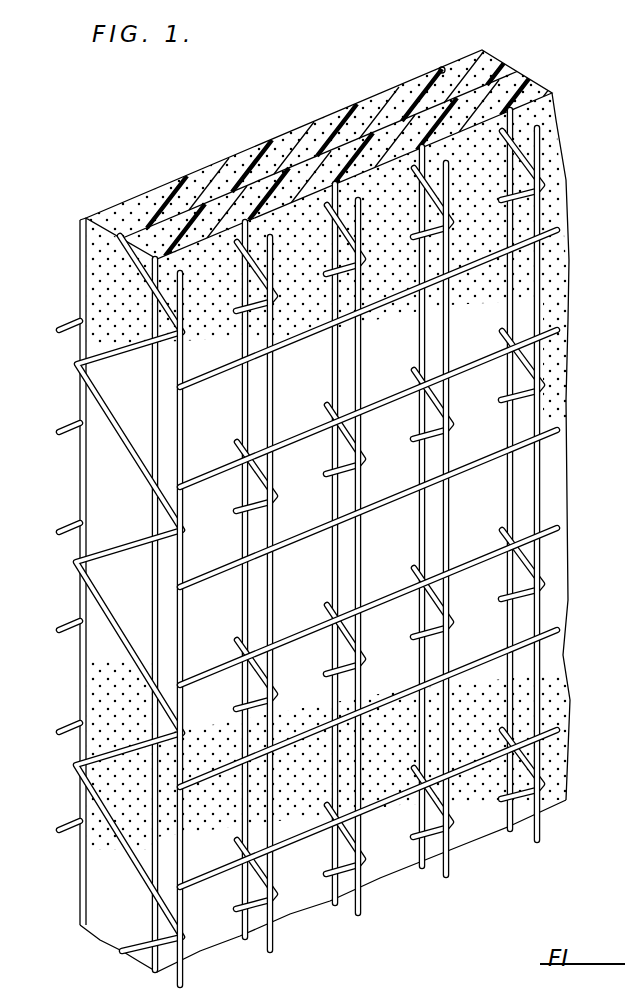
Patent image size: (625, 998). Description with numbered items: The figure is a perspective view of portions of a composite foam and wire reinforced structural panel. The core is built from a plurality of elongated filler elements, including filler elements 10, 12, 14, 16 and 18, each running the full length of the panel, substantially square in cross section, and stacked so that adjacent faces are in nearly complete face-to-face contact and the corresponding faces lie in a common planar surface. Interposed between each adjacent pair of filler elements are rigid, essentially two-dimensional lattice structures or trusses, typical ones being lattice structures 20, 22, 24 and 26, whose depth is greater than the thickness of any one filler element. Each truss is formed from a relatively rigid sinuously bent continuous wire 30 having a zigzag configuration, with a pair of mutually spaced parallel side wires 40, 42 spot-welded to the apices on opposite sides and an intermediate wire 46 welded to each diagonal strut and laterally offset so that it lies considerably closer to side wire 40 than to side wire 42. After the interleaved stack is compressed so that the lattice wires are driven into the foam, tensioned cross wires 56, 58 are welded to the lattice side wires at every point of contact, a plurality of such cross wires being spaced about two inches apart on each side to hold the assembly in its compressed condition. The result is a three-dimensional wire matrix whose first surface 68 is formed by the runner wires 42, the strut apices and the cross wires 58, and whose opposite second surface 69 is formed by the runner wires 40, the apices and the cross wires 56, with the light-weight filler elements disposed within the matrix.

The filler element 10 is at (124, 204).
The filler element 12 is at (220, 158).
The filler element 14 is at (305, 127).
The filler element 16 is at (388, 97).
The filler element 18 is at (493, 62).
The lattice structure 20 is at (187, 418).
The lattice structure 22 is at (277, 387).
The lattice structure 24 is at (366, 353).
The lattice structure 26 is at (551, 213).
The sinuously bent continuous wire 30 is at (133, 547).
The side wire 40 is at (538, 408).
The side wire 42 is at (442, 67).
The intermediate wire 46 is at (509, 425).
The cross wire 56 is at (548, 238).
The cross wire 58 is at (72, 321).
The first matrix surface 68 is at (78, 488).
The second matrix surface 69 is at (398, 881).